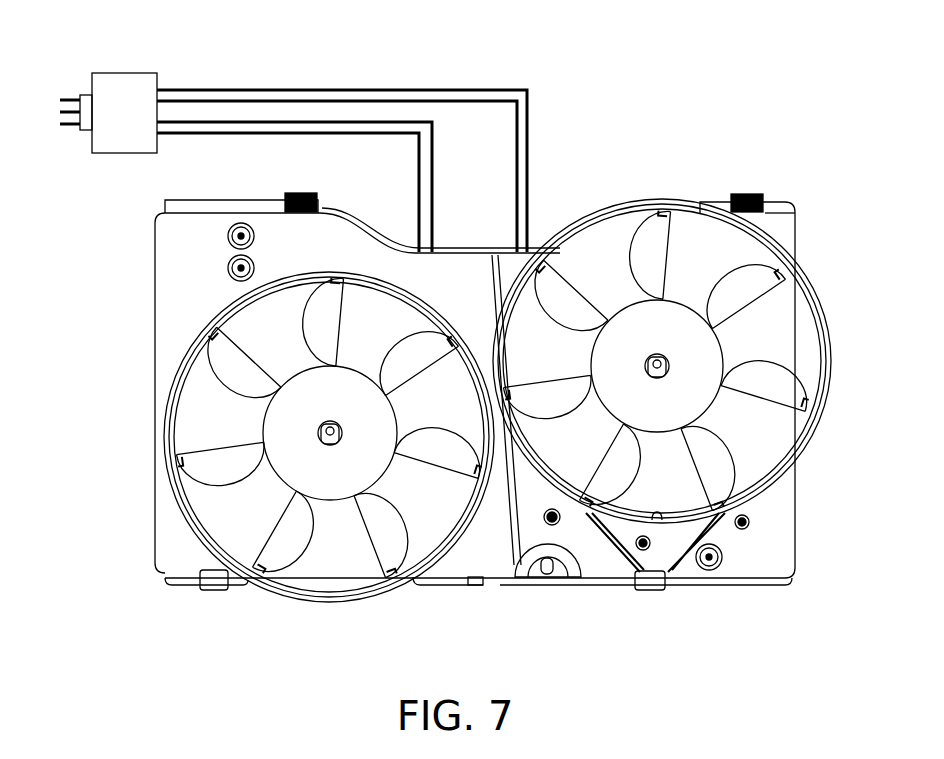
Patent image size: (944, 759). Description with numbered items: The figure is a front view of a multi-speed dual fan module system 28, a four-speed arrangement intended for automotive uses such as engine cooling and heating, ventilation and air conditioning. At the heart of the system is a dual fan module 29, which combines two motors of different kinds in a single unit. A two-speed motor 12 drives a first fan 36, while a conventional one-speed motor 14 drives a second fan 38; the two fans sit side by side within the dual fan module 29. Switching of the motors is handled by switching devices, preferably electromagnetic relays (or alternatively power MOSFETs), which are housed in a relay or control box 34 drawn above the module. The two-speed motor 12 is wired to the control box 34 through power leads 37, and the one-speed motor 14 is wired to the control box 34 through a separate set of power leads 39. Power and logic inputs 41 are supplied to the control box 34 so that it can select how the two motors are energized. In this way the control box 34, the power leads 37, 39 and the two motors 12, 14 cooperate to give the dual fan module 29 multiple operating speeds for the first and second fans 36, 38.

The two-speed motor 12 is at (668, 418).
The one-speed motor 14 is at (340, 488).
The multi-speed dual fan module system 28 is at (460, 592).
The dual fan module 29 is at (797, 238).
The control box 34 is at (124, 73).
The first fan 36 is at (807, 357).
The power leads 37 is at (478, 88).
The second fan 38 is at (208, 503).
The power leads 39 is at (435, 190).
The power and logic inputs 41 is at (70, 100).